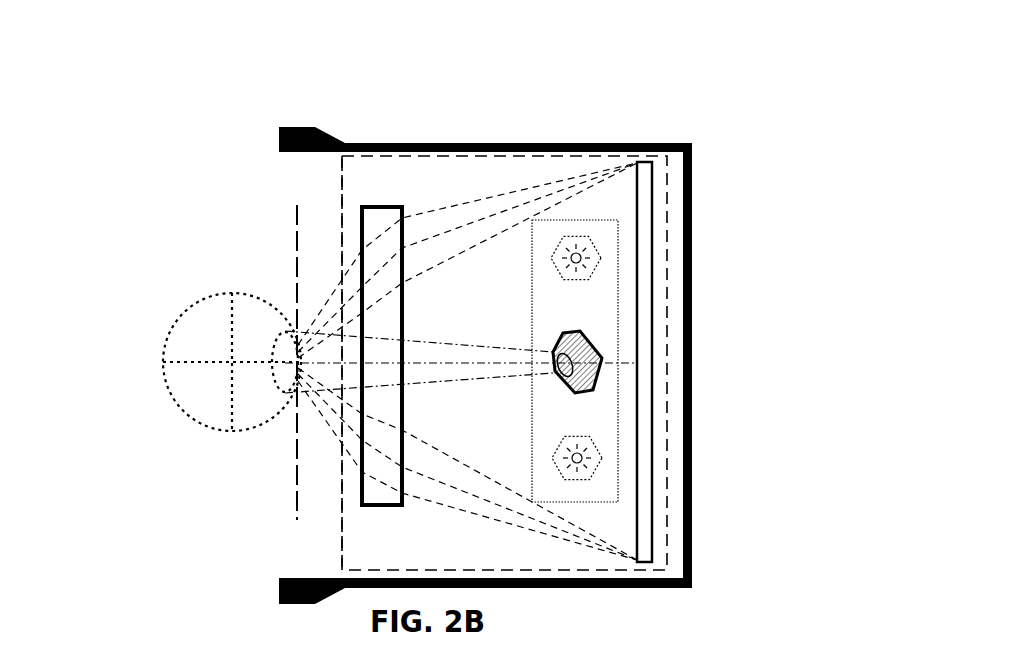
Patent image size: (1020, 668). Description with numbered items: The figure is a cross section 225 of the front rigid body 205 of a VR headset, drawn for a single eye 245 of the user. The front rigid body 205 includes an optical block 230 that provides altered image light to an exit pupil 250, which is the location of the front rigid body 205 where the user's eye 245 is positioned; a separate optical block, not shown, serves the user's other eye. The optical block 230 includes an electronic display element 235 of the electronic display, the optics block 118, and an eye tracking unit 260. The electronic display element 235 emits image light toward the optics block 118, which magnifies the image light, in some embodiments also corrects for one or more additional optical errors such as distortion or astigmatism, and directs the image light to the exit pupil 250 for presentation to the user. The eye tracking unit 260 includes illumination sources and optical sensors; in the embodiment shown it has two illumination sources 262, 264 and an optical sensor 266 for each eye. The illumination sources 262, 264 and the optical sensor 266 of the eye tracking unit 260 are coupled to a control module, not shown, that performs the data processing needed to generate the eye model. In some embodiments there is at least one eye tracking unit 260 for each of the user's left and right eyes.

The cross section 225 is at (55, 26).
The front rigid body 205 is at (660, 141).
The optics block 118 is at (358, 222).
The electronic display element 235 is at (654, 280).
The eye 245 is at (200, 300).
The exit pupil 250 is at (288, 500).
The optical block 230 is at (340, 483).
The eye tracking unit 260 is at (702, 361).
The illumination source 262 is at (576, 271).
The illumination source 264 is at (577, 469).
The optical sensor 266 is at (577, 375).